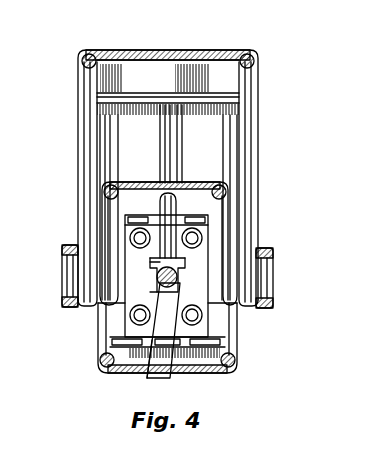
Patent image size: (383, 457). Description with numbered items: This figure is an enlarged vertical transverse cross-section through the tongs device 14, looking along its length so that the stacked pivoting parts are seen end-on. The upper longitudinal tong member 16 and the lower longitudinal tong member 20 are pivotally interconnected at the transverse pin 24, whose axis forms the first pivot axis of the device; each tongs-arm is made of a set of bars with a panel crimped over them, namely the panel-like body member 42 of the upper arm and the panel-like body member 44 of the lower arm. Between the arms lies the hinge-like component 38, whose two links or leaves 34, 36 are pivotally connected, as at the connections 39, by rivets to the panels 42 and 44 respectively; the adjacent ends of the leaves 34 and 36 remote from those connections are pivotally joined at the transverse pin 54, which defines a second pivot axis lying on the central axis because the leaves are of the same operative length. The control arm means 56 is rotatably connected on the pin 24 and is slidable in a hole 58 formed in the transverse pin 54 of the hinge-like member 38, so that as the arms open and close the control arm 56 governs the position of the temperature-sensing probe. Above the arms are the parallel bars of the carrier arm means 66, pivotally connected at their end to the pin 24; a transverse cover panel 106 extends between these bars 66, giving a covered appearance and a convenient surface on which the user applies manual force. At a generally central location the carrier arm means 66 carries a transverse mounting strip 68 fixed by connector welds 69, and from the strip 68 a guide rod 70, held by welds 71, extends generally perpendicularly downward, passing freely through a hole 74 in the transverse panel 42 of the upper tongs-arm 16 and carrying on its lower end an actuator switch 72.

The device 14 is at (282, 95).
The transverse cover panel 106 is at (163, 51).
The carrier arm means 66 is at (78, 62).
The connector welds 69 is at (100, 93).
The transverse mounting strip 68 is at (219, 96).
The welds 71 is at (154, 112).
The guide rod 70 is at (160, 150).
The panel-like body member 42 is at (203, 182).
The upper longitudinal tong member 16 is at (103, 192).
The pivotal connection 39 is at (212, 218).
The link or leaf 34 is at (130, 240).
The hole 74 is at (163, 190).
The transverse pin 54 is at (186, 282).
The control arm means 56 is at (156, 276).
The actuator switch 72 is at (160, 260).
The panel-like body member 44 is at (178, 378).
The hinge-like component 38 is at (133, 303).
The lower longitudinal tong member 20 is at (103, 368).
The link or leaf 36 is at (130, 316).
The transverse pin 24 is at (263, 273).
The hole 58 is at (147, 372).